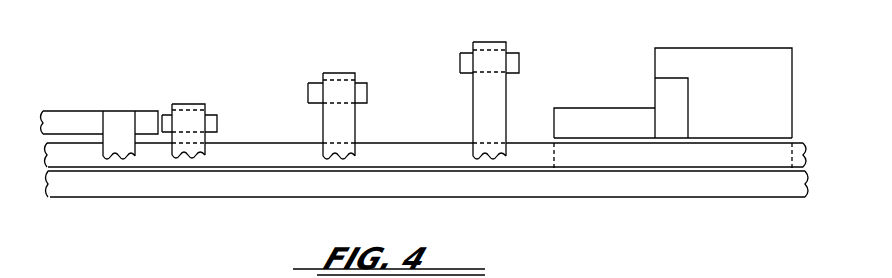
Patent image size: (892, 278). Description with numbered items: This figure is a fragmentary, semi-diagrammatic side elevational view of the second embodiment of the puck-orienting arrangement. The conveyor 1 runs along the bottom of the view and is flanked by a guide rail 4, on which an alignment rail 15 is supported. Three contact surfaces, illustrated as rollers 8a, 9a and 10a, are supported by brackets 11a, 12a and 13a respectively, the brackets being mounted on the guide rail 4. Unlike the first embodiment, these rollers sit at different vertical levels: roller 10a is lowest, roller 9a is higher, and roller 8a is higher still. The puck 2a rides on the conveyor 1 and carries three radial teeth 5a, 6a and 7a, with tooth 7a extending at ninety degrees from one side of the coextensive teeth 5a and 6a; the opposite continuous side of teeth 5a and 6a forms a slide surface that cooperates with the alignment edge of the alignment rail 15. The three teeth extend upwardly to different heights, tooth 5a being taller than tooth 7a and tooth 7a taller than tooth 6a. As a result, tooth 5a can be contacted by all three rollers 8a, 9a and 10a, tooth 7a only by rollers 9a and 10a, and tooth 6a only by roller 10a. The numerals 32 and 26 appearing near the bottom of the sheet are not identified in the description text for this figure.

The conveyor 1 is at (255, 190).
The guide rail 4 is at (407, 160).
The alignment rail 15 is at (63, 115).
The roller 10a is at (212, 116).
The bracket 13a is at (202, 140).
The bracket 12a is at (350, 120).
The roller 9a is at (367, 83).
The bracket 11a is at (503, 97).
The roller 8a is at (517, 55).
The tooth 6a is at (582, 113).
The tooth 5a is at (745, 52).
The tooth 7a is at (662, 80).
The puck 2a is at (702, 138).
The element 32 is at (688, 277).
The element 26 is at (752, 269).